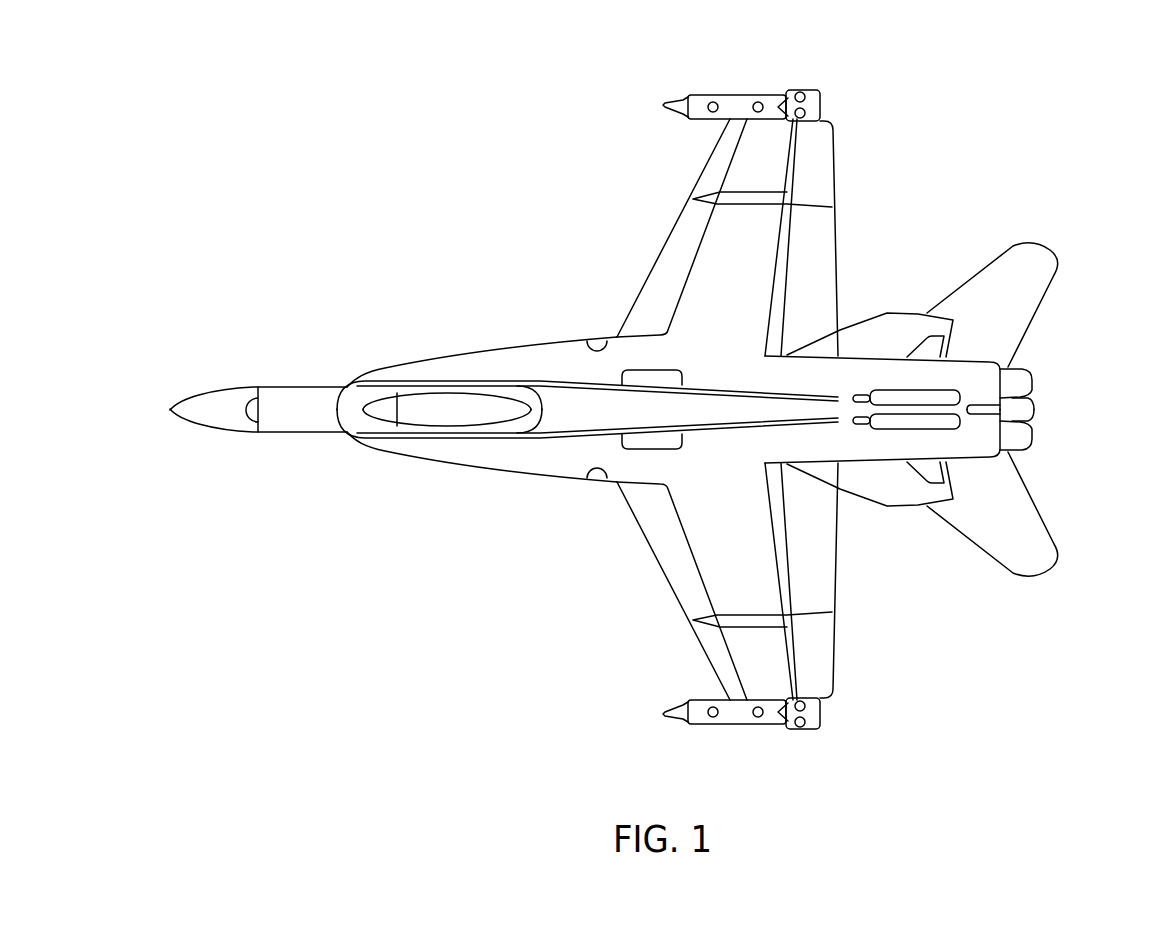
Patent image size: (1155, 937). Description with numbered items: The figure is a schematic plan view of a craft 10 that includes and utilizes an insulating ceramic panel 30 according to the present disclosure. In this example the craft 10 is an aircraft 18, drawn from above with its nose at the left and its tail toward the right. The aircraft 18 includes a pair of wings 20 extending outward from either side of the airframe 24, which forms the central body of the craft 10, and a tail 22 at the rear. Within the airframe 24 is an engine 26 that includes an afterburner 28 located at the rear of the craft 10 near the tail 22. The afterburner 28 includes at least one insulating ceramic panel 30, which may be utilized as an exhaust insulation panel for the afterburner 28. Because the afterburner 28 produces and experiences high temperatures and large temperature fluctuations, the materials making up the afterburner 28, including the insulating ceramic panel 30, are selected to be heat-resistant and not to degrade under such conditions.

The craft 10 is at (103, 86).
The aircraft 18 is at (118, 153).
The wings 20 is at (625, 205).
The tail 22 is at (1002, 613).
The airframe 24 is at (435, 483).
The engine 26 is at (973, 482).
The afterburner 28 is at (1015, 455).
The insulating ceramic panel 30 is at (1018, 437).